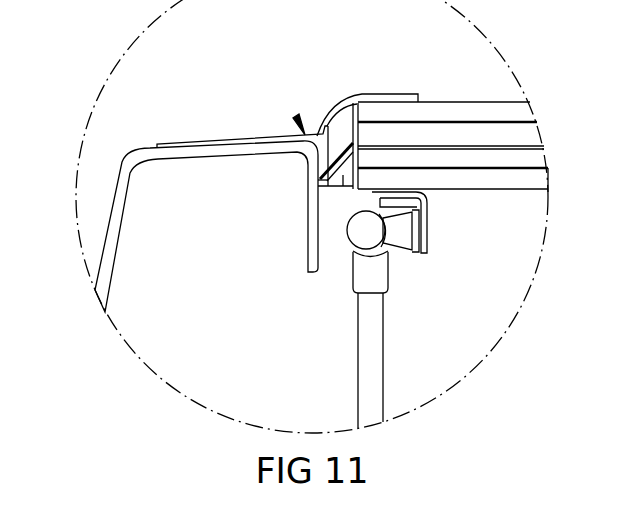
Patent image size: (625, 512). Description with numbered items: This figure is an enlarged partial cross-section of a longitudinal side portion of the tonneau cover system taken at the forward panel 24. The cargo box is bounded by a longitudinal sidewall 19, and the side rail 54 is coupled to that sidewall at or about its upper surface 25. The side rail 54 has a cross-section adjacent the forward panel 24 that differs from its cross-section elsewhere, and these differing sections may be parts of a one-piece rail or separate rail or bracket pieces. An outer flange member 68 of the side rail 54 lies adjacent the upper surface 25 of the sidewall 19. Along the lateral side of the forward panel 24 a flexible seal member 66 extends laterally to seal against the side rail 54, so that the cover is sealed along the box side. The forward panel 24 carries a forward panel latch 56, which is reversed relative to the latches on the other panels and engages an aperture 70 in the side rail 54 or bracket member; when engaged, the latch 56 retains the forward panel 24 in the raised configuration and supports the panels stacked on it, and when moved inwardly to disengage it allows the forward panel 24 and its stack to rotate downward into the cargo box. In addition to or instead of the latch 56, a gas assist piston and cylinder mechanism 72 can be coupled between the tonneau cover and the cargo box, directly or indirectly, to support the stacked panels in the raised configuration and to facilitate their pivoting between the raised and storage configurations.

The longitudinal sidewall 19 is at (175, 206).
The forward panel 24 is at (527, 135).
The upper surface 25 is at (232, 153).
The side rail 54 is at (296, 118).
The forward panel latch 56 is at (345, 175).
The flexible seal member 66 is at (392, 95).
The outer flange member 68 is at (240, 142).
The aperture 70 is at (323, 168).
The gas assist piston and cylinder mechanism 72 is at (370, 343).